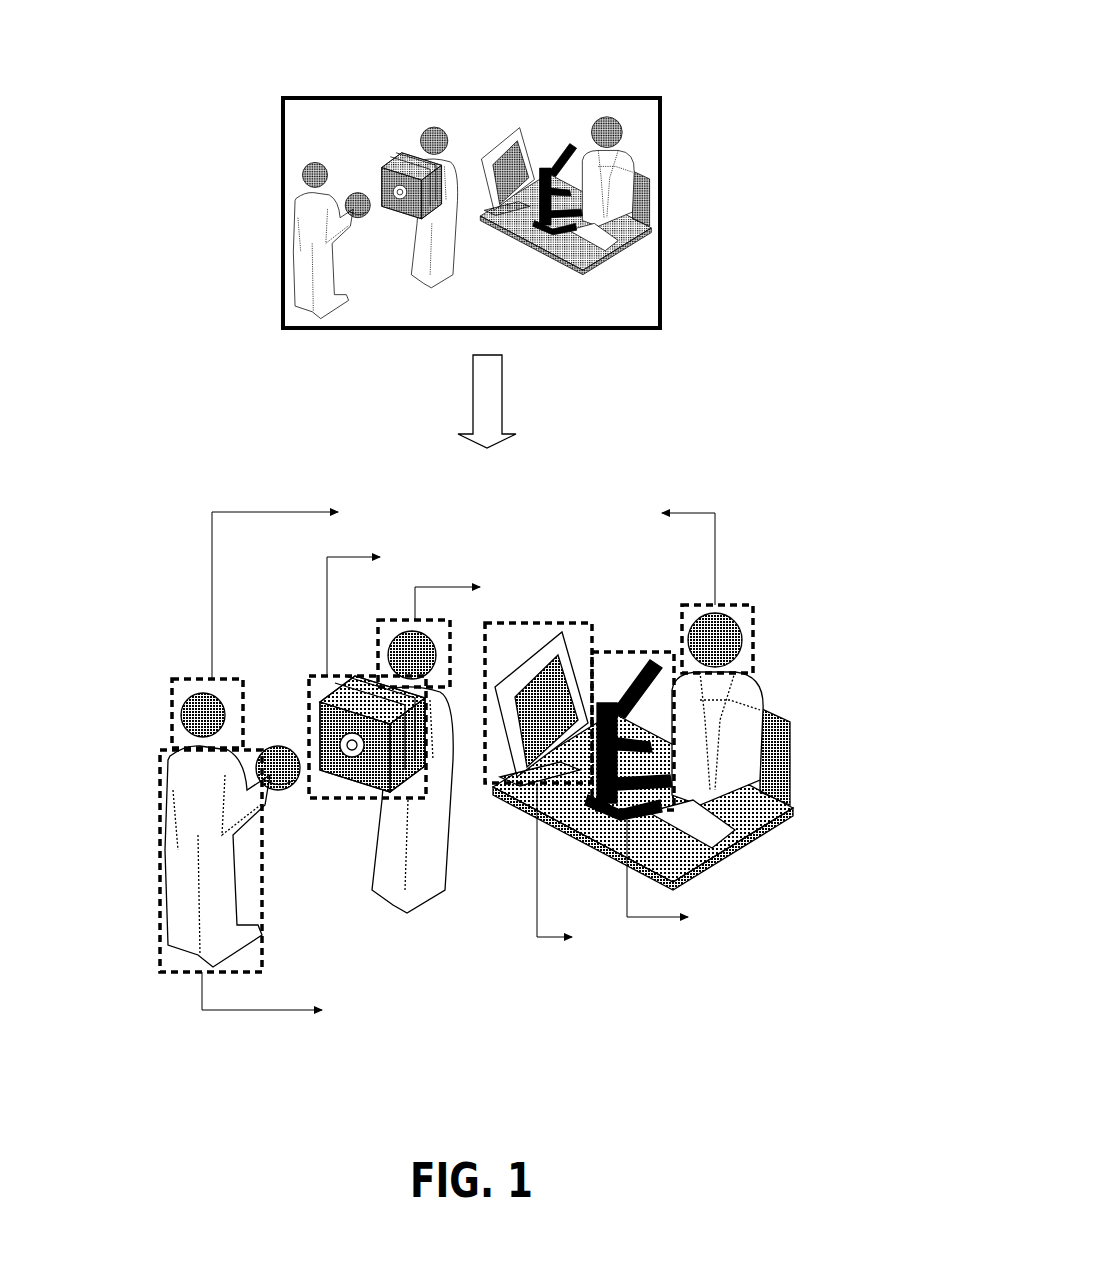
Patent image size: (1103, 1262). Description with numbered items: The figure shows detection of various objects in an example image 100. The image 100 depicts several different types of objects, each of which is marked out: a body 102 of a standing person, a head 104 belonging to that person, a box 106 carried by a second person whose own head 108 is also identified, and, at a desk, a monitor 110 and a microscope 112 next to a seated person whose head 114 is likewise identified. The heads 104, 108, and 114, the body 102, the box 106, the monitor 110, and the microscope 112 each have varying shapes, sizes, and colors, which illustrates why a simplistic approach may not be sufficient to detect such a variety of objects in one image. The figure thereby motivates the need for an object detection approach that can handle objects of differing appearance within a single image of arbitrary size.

The image 100 is at (645, 57).
The body 102 is at (153, 761).
The head 104 is at (178, 663).
The box 106 is at (336, 663).
The head 108 is at (368, 623).
The monitor 110 is at (557, 796).
The microscope 112 is at (645, 816).
The head 114 is at (750, 590).